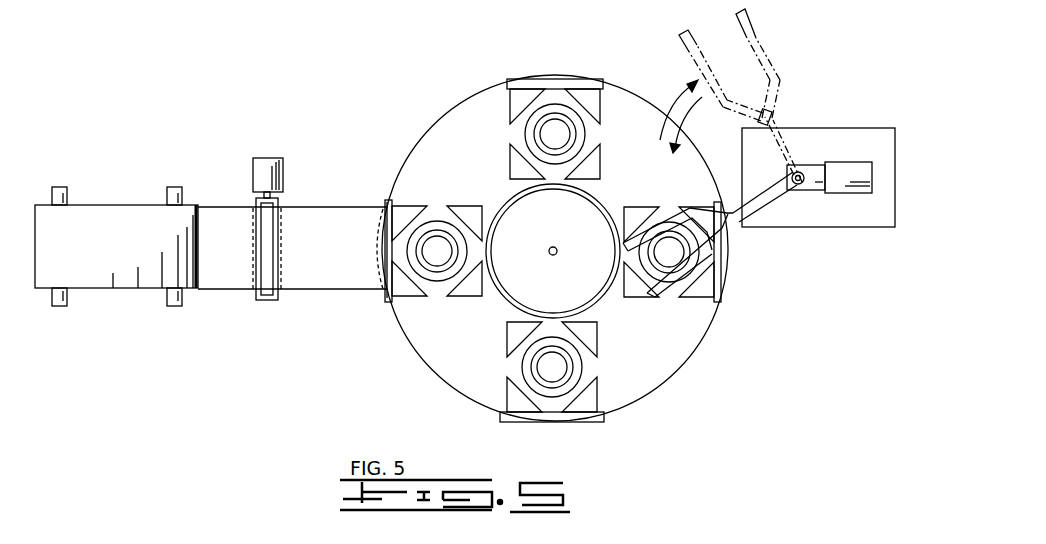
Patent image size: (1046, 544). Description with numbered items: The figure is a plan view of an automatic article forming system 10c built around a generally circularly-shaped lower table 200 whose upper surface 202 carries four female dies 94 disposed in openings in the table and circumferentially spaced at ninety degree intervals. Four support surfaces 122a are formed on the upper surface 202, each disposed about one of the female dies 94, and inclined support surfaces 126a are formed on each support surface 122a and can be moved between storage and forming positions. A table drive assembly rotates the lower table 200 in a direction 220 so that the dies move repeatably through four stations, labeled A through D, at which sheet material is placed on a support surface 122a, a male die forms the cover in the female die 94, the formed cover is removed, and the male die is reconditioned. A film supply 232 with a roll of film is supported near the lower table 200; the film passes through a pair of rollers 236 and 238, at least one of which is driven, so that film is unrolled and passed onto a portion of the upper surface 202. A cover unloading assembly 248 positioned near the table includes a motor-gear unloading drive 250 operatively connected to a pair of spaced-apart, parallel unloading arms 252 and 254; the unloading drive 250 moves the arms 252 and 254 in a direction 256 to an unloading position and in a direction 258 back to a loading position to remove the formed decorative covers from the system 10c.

The modified system 10c is at (410, 62).
The female dies 94 is at (541, 135).
The support surfaces 122a is at (503, 116).
The inclined support surfaces 126a is at (408, 203).
The lower table 200 is at (668, 390).
The upper surface 202 is at (625, 406).
The direction 220 is at (433, 405).
The film supply 232 is at (94, 229).
The roller 236 is at (265, 162).
The roller 238 is at (256, 300).
The cover unloading assembly 248 is at (840, 150).
The motor-gear unloading drive 250 is at (849, 200).
The unloading arm 252 is at (700, 262).
The unloading arm 254 is at (753, 35).
The direction 256 is at (673, 108).
The direction 258 is at (686, 117).